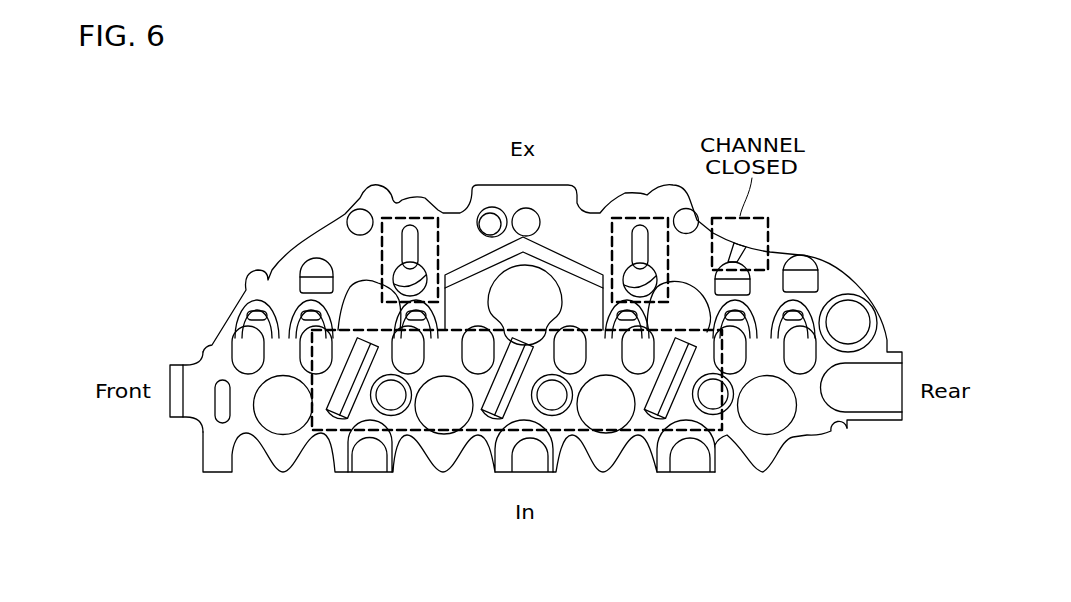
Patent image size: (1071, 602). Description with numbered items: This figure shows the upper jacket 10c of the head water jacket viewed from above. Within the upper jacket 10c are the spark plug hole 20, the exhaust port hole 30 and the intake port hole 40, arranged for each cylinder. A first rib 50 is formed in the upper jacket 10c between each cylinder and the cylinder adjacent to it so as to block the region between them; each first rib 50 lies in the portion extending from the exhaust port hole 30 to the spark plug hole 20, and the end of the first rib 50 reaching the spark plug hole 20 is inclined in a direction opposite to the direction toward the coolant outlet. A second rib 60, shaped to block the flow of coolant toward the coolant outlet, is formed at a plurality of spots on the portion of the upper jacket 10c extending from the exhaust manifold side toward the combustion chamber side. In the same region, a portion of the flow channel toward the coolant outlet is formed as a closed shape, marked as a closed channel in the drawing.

The upper jacket 10c is at (365, 160).
The spark plug hole 20 is at (271, 425).
The exhaust port hole 30 is at (240, 340).
The intake port hole 40 is at (252, 445).
The first rib 50 is at (342, 405).
The second rib 60 is at (423, 216).